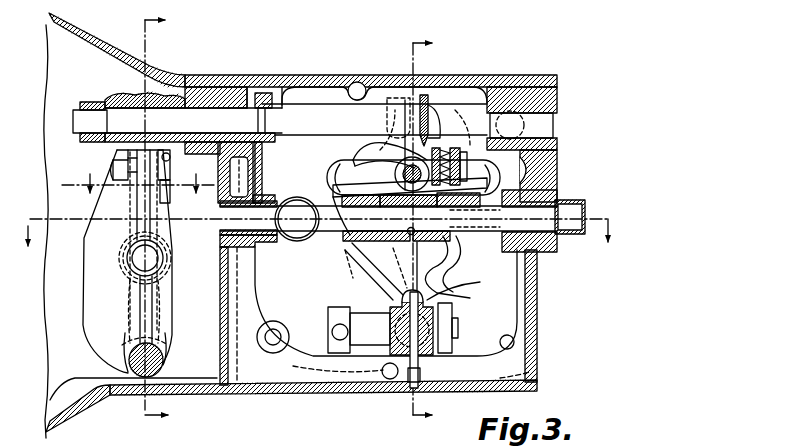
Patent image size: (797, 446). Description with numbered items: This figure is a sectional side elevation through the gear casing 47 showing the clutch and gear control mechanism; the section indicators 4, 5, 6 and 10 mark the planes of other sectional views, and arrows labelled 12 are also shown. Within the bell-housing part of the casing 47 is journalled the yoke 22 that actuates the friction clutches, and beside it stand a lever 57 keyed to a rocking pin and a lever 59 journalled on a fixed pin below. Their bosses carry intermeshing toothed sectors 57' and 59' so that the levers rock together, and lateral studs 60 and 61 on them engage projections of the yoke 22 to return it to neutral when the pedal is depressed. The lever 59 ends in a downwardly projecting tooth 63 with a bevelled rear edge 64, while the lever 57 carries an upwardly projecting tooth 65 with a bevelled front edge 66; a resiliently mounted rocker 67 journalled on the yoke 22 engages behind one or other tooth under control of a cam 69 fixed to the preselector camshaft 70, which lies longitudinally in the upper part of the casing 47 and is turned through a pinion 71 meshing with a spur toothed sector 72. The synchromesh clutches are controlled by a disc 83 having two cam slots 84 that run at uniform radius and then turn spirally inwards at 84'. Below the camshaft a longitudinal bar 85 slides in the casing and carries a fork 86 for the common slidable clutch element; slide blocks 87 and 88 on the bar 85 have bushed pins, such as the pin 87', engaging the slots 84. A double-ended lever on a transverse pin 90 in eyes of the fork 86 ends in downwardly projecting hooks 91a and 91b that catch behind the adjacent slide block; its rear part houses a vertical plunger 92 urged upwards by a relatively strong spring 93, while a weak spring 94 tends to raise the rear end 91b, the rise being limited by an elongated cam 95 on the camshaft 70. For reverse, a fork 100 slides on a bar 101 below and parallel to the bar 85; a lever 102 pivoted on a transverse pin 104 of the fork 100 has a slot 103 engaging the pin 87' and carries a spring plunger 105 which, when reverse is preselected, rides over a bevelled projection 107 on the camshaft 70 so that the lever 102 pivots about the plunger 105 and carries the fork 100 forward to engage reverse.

The section line 4- 4 is at (426, 231).
The section line 5- 5 is at (316, 237).
The section line 6- 6 is at (158, 223).
The section line 10- 10 is at (139, 182).
The air passage 12 is at (332, 98).
The yoke 22 is at (163, 362).
The casing 47 is at (537, 358).
The lever 57 is at (159, 244).
The toothed sector 57' is at (163, 258).
The lever 59 is at (116, 261).
The toothed sector 59' is at (161, 312).
The lateral stud 60 is at (170, 192).
The lateral stud 61 is at (113, 175).
The downwardly projecting tooth 63 is at (170, 158).
The bevelled rear edge 64 is at (168, 180).
The upwardly projecting tooth 65 is at (125, 195).
The bevelled front edge 66 is at (110, 160).
The rocker lever 67 is at (156, 133).
The cam 69 is at (108, 96).
The preselector cam-shaft 70 is at (82, 116).
The pinion 71 is at (259, 112).
The spur toothed sector 72 is at (262, 170).
The disc 83 is at (458, 286).
The cam slot 84 is at (419, 219).
The spiral slot portion 84' is at (410, 224).
The slide bar 85 is at (305, 238).
The fork 86 is at (418, 242).
The slide block 87 is at (366, 271).
The bushed pin 87' is at (343, 268).
The slide block 88 is at (414, 234).
The transverse pin 90 is at (427, 100).
The hook 91a is at (333, 170).
The hook 91b is at (496, 170).
The vertical plunger 92 is at (437, 148).
The spring 93 is at (455, 150).
The weak spring 94 is at (368, 152).
The elongated cam 95 is at (456, 112).
The reverse fork 100 is at (430, 352).
The bar 101 is at (368, 338).
The slotted lever 102 is at (385, 303).
The slot 103 is at (380, 219).
The transverse pin 104 is at (458, 314).
The spring plunger 105 is at (407, 90).
The projection 107 is at (386, 120).